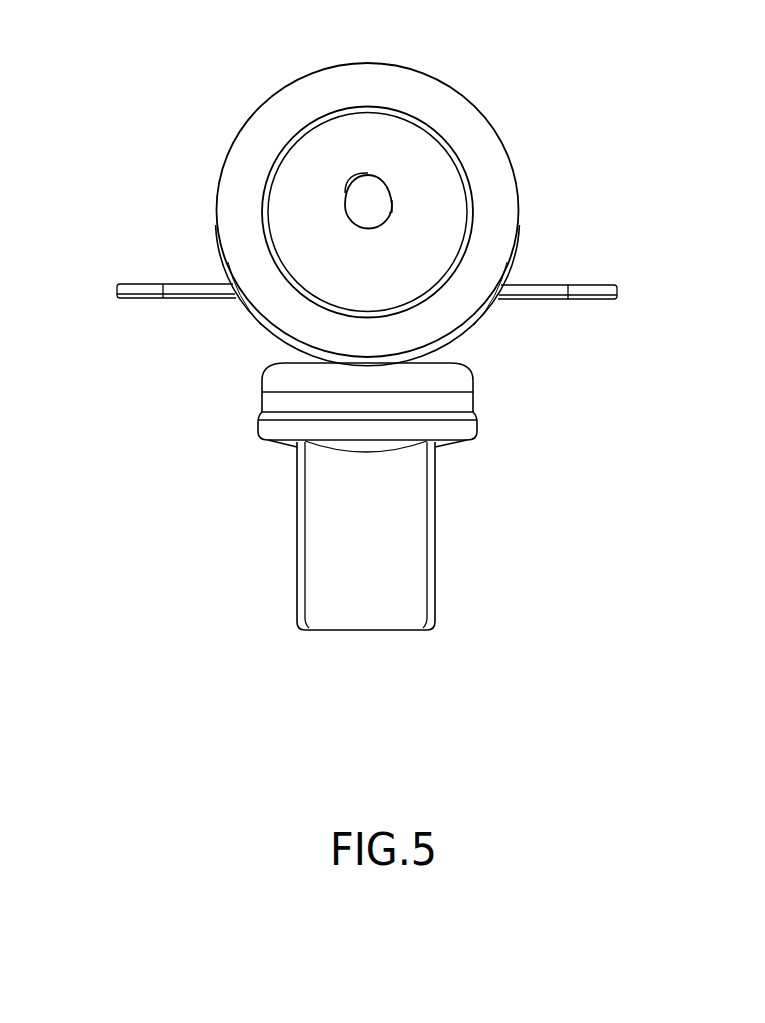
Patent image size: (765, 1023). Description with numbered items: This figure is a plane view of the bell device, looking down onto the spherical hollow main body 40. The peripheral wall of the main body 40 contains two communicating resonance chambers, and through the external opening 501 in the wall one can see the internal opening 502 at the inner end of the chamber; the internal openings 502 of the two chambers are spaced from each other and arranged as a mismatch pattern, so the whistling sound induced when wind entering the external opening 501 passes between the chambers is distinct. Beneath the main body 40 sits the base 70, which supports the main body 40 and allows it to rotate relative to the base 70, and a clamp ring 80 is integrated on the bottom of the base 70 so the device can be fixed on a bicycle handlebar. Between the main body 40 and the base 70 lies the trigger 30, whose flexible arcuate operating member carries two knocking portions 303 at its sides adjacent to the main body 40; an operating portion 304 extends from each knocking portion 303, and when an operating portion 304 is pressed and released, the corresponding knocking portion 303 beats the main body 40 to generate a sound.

The trigger 30 is at (328, 297).
The knocking portion 303 is at (516, 240).
The operating portion 304 is at (117, 299).
The main body 40 is at (510, 159).
The external opening 501 is at (445, 207).
The internal opening 502 is at (353, 212).
The base 70 is at (273, 383).
The clamp ring 80 is at (313, 571).